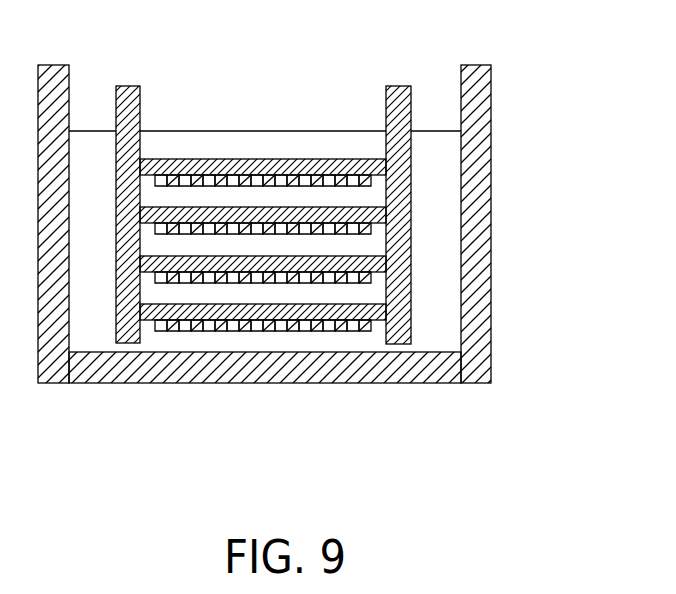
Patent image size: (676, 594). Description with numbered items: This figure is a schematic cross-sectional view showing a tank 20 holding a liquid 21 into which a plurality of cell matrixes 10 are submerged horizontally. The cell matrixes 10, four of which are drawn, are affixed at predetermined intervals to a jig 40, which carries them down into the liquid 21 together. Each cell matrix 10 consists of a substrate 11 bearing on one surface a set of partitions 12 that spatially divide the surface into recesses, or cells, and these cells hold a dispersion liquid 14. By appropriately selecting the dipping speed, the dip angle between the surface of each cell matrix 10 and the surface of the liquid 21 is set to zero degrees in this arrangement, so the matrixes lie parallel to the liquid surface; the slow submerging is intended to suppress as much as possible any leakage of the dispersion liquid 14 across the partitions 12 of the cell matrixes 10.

The cell matrix 10 is at (263, 233).
The substrate 11 is at (250, 159).
The partitions 12 is at (173, 331).
The dispersion liquid 14 is at (234, 331).
The tank 20 is at (492, 215).
The liquid 21 is at (449, 296).
The jig 40 is at (129, 86).